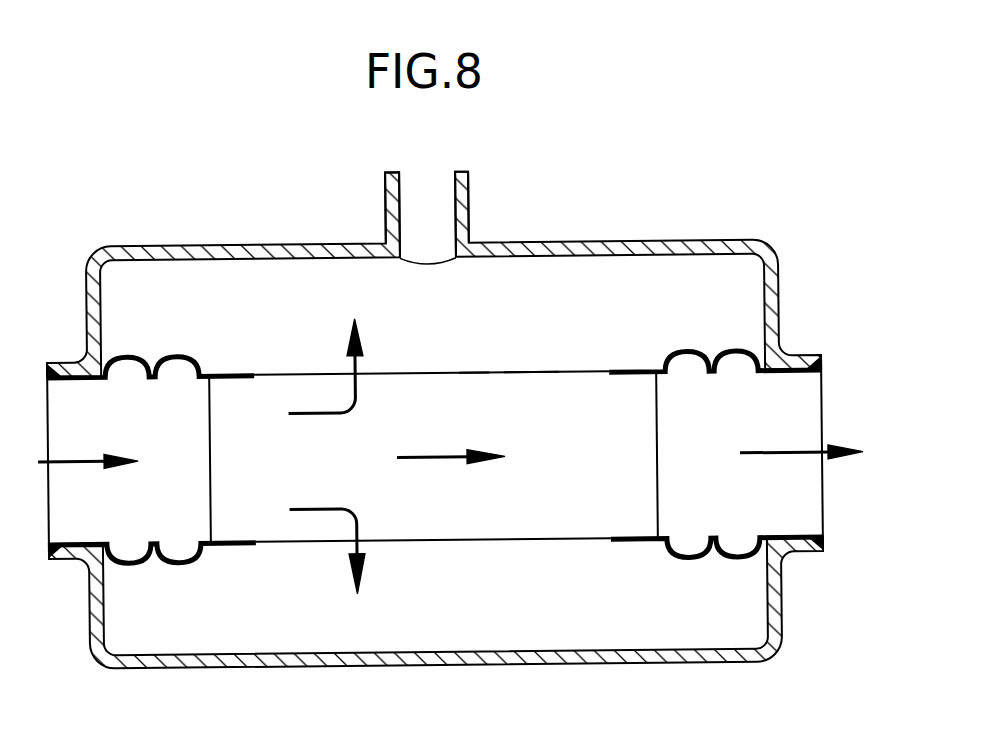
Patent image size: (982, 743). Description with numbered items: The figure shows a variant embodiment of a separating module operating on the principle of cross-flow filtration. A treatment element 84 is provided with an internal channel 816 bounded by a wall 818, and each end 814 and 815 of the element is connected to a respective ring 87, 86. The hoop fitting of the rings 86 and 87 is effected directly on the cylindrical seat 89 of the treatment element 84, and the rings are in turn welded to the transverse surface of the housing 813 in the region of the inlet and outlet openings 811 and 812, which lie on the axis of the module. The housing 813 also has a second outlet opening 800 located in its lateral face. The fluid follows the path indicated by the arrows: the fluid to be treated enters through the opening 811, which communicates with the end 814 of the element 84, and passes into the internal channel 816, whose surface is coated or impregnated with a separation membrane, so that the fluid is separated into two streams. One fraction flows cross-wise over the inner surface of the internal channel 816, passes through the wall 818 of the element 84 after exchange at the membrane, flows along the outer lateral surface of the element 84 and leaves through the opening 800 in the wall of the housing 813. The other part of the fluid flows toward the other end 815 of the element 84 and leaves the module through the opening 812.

The second outlet opening 800 is at (425, 188).
The housing 813 is at (143, 246).
The ring 87 is at (183, 352).
The ring 86 is at (683, 355).
The end 814 is at (227, 438).
The other end 815 is at (643, 414).
The internal channel 816 is at (375, 447).
The wall 818 is at (473, 372).
The treatment element 84 is at (525, 374).
The cylindrical seat 89 is at (207, 396).
The inlet opening 811 is at (100, 503).
The outlet opening 812 is at (793, 517).